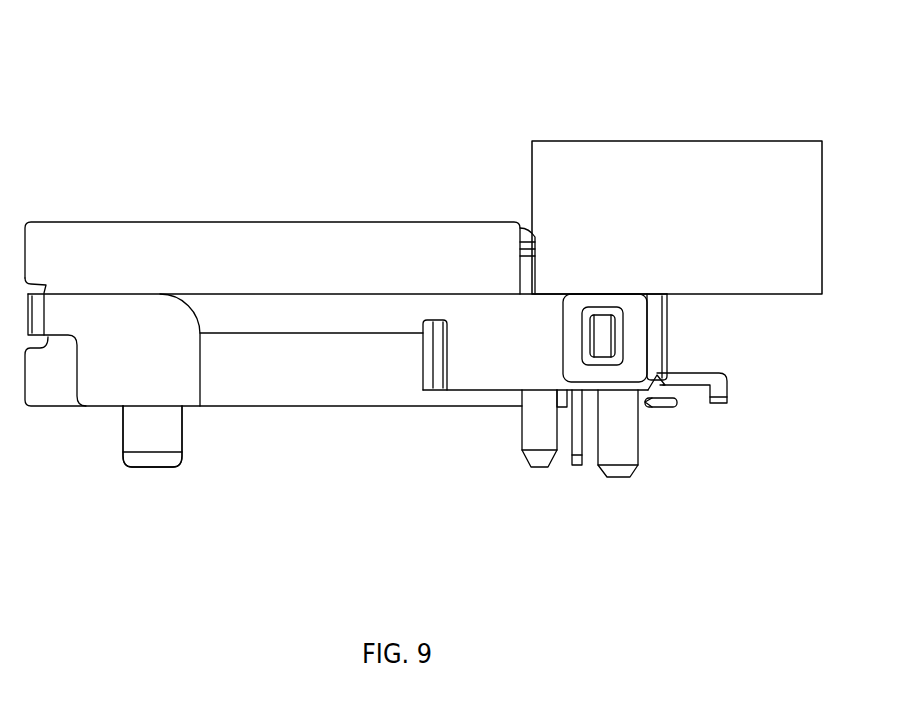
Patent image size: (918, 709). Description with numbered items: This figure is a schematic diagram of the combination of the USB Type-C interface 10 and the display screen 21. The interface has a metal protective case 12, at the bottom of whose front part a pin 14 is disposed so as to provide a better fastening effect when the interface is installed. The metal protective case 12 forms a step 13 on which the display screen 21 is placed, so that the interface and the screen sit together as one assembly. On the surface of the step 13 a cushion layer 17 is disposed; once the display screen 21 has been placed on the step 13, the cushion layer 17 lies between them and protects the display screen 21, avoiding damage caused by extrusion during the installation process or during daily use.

The USB Type-C interface 10 is at (133, 512).
The metal protective case 12 is at (348, 245).
The step 13 is at (665, 122).
The pin 14 is at (168, 425).
The cushion layer 17 is at (527, 272).
The display screen 21 is at (676, 227).